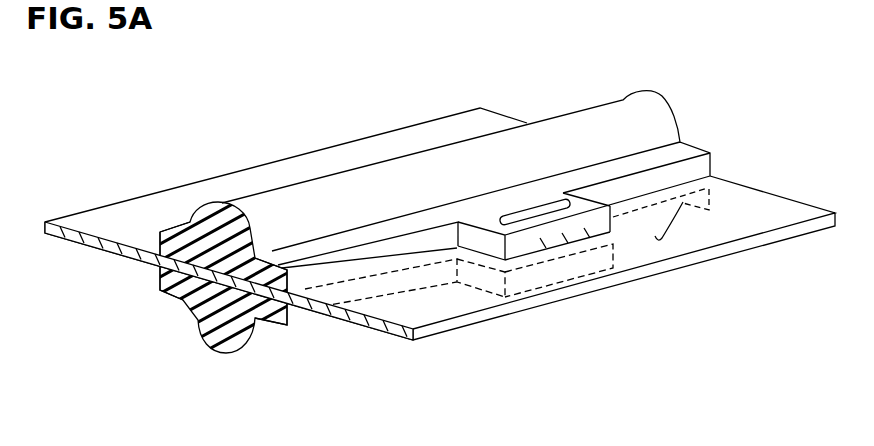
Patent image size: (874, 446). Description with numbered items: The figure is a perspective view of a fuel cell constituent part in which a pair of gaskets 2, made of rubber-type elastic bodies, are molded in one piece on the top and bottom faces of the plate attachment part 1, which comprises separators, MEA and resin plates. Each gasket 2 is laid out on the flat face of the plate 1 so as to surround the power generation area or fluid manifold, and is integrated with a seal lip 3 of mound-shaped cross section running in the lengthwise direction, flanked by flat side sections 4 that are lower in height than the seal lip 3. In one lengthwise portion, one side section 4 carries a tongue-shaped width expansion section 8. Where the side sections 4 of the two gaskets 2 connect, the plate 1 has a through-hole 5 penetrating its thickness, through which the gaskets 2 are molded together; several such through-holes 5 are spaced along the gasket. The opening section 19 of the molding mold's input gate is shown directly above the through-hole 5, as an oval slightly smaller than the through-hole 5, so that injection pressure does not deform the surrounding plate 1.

The plate attachment part 1 is at (732, 202).
The gasket 2 is at (626, 112).
The seal lip 3 is at (212, 212).
The side section 4 is at (162, 233).
The through-hole 5 is at (574, 260).
The width expansion section 8 is at (540, 288).
The opening section 19 is at (526, 207).